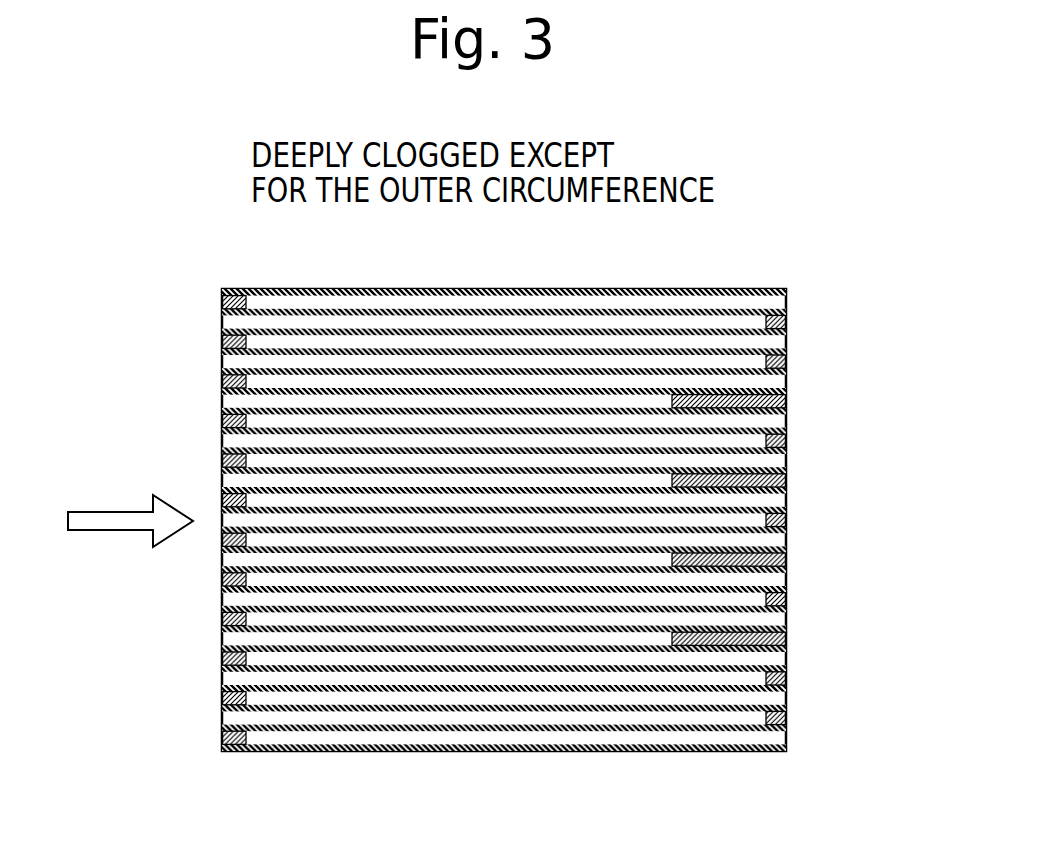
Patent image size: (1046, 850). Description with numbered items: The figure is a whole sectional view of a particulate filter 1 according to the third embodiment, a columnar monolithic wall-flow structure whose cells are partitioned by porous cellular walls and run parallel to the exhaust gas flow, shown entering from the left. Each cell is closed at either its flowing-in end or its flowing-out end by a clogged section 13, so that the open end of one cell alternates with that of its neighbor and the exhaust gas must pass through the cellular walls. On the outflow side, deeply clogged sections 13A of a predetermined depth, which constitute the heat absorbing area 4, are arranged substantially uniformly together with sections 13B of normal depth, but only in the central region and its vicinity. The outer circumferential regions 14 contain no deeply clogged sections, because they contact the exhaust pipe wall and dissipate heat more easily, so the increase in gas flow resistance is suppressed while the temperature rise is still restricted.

The particulate filter 1 is at (200, 367).
The clogged section 13 is at (240, 616).
The deeply clogged section 13A is at (786, 556).
The section having a normal depth 13B is at (786, 598).
The outer circumferential region 14 is at (793, 292).
The heat absorbing area 4 is at (785, 757).